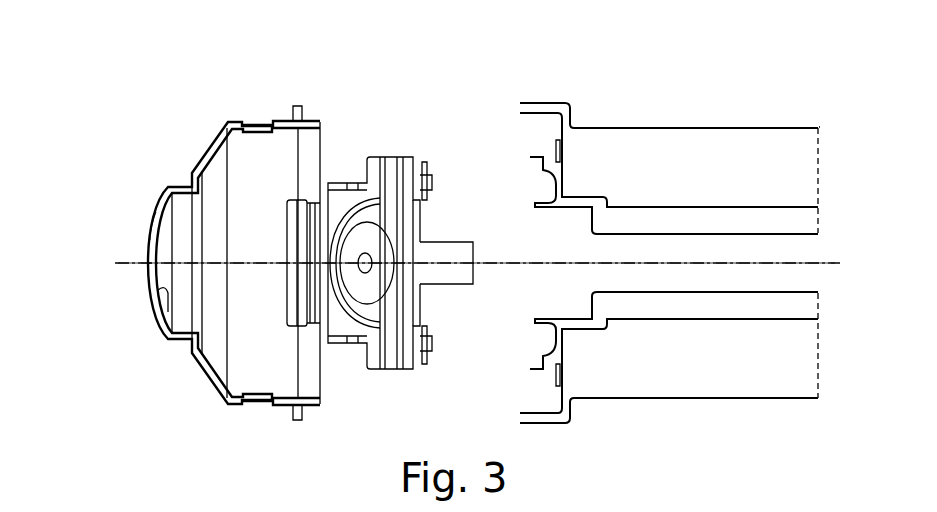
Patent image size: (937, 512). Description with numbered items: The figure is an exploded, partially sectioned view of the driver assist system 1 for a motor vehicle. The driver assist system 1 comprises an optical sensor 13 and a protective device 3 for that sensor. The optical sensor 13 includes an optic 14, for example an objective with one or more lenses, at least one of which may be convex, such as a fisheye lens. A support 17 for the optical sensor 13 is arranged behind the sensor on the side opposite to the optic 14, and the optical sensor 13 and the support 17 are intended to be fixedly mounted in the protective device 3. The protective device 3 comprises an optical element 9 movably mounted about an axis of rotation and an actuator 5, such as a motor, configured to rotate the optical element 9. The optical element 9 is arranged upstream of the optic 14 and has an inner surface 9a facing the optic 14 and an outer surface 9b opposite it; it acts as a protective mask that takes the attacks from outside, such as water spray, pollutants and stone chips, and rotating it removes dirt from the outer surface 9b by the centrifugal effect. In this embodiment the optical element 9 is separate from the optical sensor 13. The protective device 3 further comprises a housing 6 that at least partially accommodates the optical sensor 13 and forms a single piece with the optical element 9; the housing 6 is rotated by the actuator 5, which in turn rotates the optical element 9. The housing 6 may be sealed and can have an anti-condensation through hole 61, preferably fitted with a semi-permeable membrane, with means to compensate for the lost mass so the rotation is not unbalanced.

The driver assist system 1 is at (772, 64).
The protective device 3 is at (228, 82).
The actuator 5 is at (683, 140).
The housing 6 is at (313, 118).
The optical element 9 is at (190, 120).
The inner surface 9a is at (165, 298).
The outer surface 9b is at (152, 220).
The optical sensor 13 is at (395, 180).
The optic 14 is at (273, 265).
The support 17 is at (555, 328).
The through hole 61 is at (265, 118).